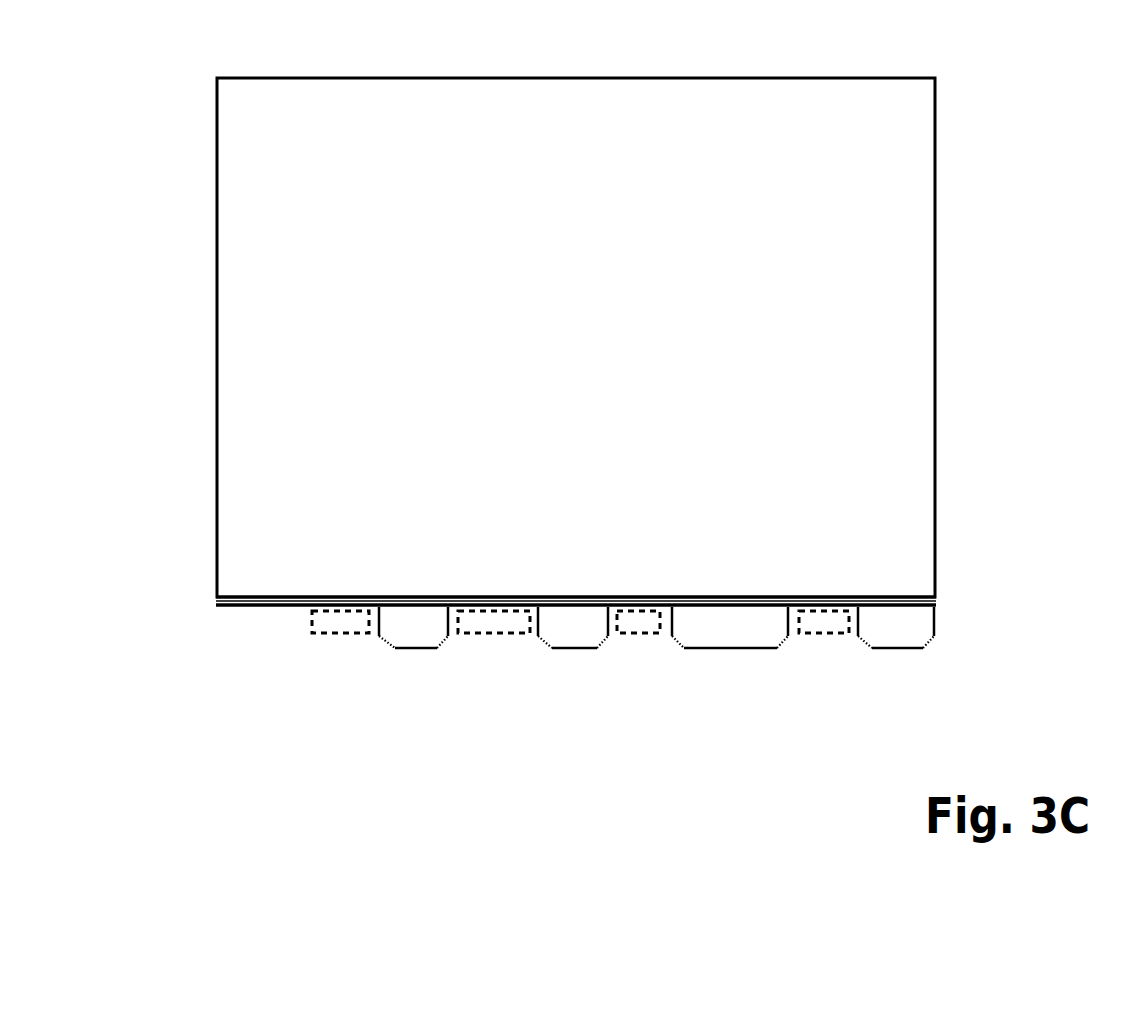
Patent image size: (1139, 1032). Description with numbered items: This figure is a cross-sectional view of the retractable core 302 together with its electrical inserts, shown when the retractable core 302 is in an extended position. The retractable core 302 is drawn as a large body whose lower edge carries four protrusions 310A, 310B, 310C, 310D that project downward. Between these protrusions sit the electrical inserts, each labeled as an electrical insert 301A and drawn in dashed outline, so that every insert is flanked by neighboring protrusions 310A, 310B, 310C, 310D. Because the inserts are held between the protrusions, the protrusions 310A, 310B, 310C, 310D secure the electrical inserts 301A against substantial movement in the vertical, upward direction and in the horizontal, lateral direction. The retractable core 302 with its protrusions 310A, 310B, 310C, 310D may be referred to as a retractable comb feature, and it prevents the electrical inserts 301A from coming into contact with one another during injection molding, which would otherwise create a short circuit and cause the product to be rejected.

The retractable core 302 is at (240, 77).
The electrical insert 301A is at (316, 636).
The protrusion 310A is at (411, 645).
The protrusion 310B is at (563, 645).
The protrusion 310C is at (716, 645).
The protrusion 310D is at (900, 645).